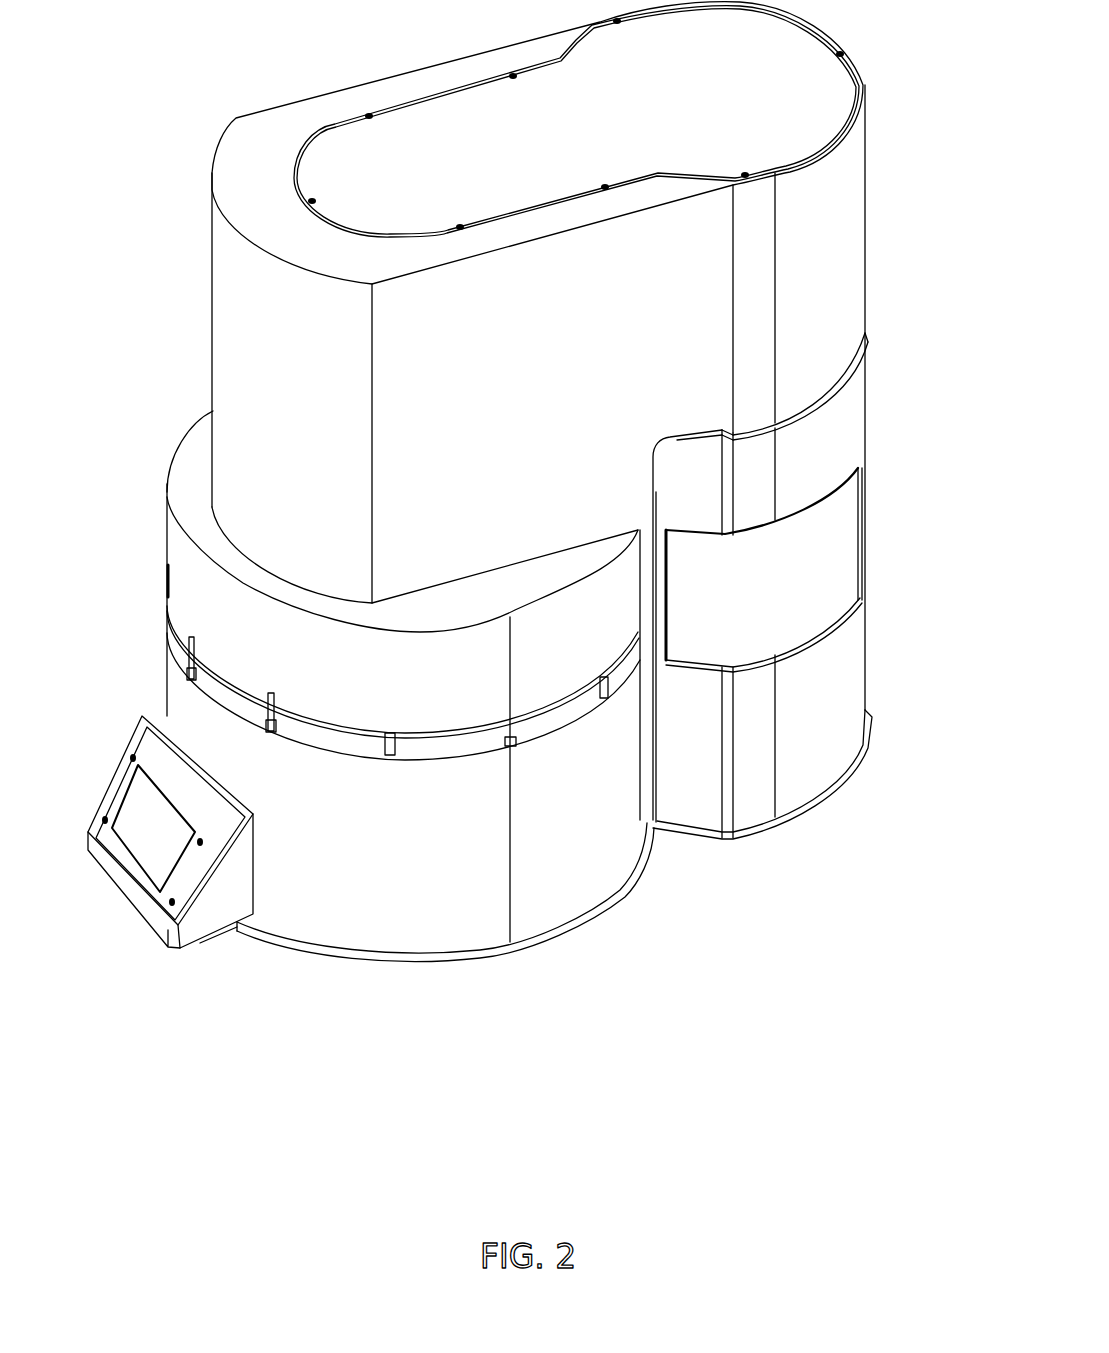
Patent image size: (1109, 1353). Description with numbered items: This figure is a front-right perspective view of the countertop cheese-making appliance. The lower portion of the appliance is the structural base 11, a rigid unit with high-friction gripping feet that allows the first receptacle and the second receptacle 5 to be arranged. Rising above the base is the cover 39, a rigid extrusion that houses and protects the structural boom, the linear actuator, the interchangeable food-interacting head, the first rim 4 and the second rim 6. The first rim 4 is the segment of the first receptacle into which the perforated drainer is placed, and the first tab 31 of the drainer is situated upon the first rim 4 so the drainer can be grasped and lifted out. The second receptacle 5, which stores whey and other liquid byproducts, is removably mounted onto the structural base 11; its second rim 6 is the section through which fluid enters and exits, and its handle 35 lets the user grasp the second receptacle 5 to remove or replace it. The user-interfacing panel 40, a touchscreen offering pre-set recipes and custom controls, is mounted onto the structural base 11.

The cover 39 is at (506, 360).
The structural base 11 is at (610, 902).
The first tab 31 is at (528, 722).
The first rim 4 is at (348, 732).
The second receptacle 5 is at (812, 740).
The second rim 6 is at (843, 383).
The handle 35 is at (837, 543).
The user-interfacing panel 40 is at (86, 740).